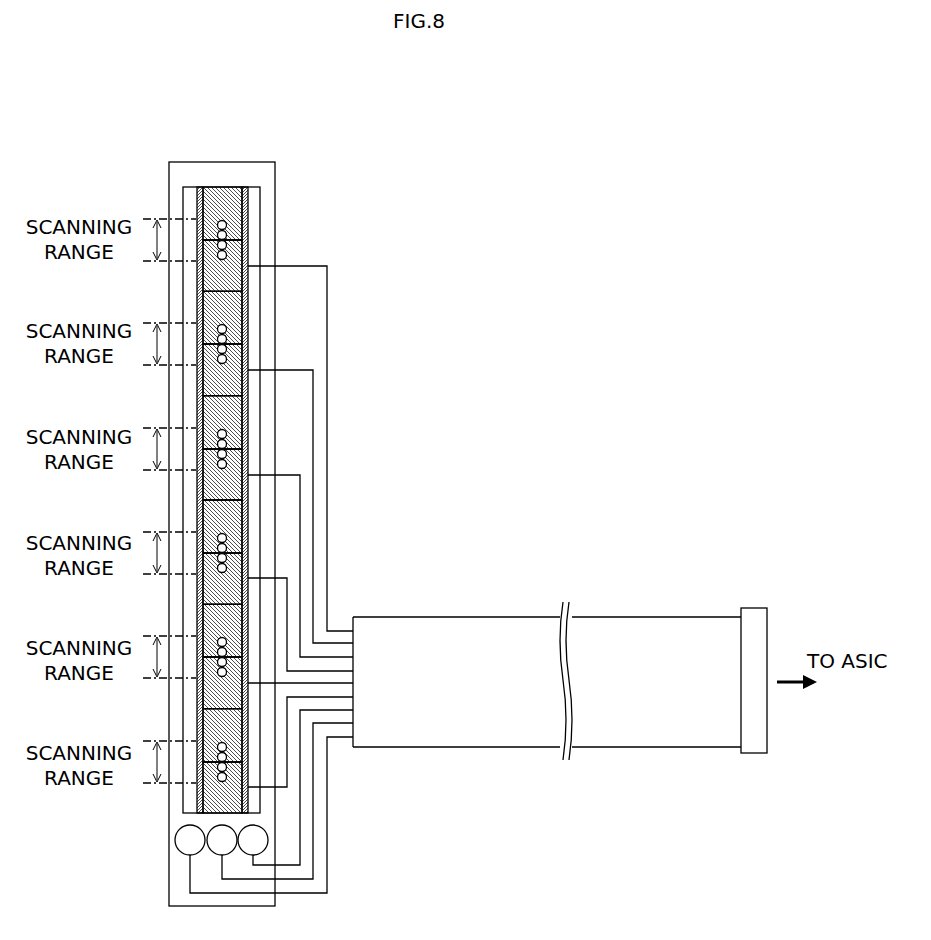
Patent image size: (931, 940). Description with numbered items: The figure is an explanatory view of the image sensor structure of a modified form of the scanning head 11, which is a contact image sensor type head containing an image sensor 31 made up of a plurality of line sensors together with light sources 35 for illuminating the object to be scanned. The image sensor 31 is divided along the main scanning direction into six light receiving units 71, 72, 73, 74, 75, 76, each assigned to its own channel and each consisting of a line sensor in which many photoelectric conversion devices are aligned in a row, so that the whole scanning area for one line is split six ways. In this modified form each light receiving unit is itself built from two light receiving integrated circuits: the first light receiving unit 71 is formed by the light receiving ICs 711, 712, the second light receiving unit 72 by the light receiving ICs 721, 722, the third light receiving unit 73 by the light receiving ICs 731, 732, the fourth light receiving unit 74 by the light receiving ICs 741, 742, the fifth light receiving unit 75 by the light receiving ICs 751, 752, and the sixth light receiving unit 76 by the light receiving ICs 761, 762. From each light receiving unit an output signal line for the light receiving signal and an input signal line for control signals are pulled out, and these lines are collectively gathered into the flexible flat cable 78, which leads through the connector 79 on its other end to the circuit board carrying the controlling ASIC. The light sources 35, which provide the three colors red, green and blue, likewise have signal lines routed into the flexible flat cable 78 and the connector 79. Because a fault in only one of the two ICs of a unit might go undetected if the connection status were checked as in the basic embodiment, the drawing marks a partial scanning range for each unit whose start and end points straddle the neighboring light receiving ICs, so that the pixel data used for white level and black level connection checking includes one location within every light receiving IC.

The scanning head 11 is at (222, 162).
The image sensor 31 is at (184, 181).
The light sources 35 is at (181, 853).
The light receiving unit 71 is at (223, 409).
The light receiving IC 711 is at (230, 207).
The light receiving IC 712 is at (232, 257).
The light receiving unit 72 is at (225, 456).
The light receiving IC 721 is at (205, 311).
The light receiving IC 722 is at (207, 382).
The light receiving unit 73 is at (210, 523).
The light receiving IC 731 is at (207, 420).
The light receiving IC 732 is at (207, 490).
The light receiving unit 74 is at (210, 584).
The light receiving IC 741 is at (207, 525).
The light receiving IC 742 is at (208, 593).
The light receiving unit 75 is at (213, 653).
The light receiving IC 751 is at (208, 627).
The light receiving IC 752 is at (208, 698).
The light receiving unit 76 is at (211, 757).
The light receiving IC 761 is at (207, 733).
The light receiving IC 762 is at (208, 801).
The flexible flat cable 78 is at (588, 630).
The connector 79 is at (747, 612).